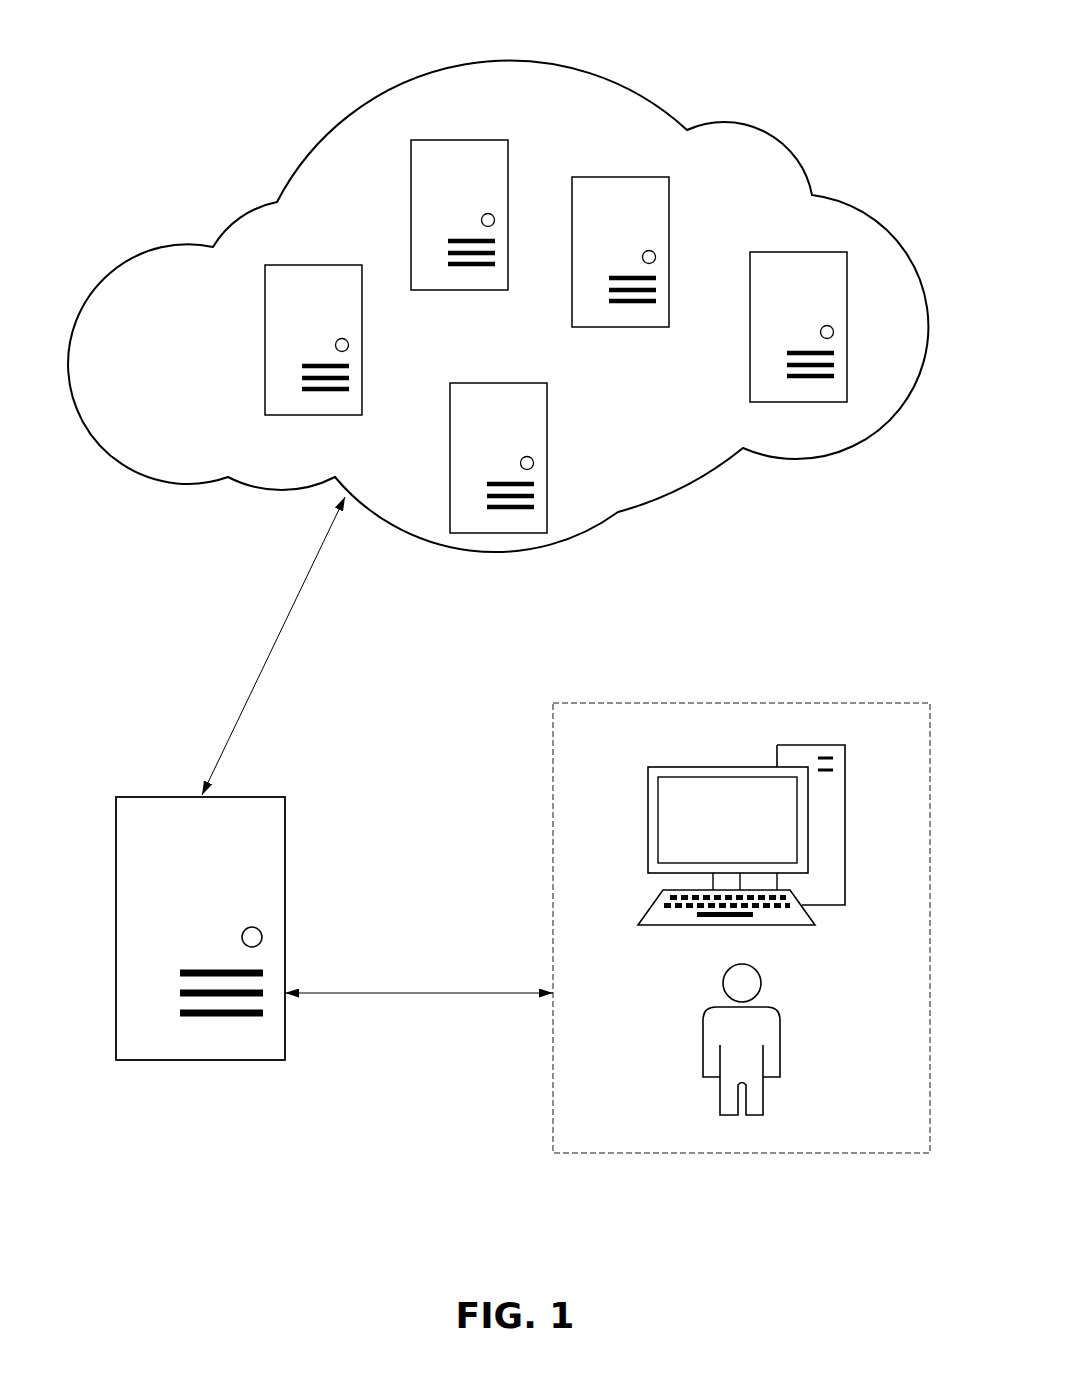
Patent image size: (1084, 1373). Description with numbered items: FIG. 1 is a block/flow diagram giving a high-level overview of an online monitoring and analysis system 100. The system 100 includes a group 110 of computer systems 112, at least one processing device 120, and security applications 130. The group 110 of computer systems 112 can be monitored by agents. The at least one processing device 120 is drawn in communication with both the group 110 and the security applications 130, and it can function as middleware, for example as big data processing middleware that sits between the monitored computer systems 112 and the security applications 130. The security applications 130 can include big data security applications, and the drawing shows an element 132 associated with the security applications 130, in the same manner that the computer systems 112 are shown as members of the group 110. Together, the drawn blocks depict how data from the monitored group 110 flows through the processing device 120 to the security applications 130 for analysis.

The system 100 is at (497, 34).
The cloud network 110 is at (778, 137).
The cloud server 112 is at (313, 340).
The server 120 is at (252, 797).
The user environment 130 is at (627, 703).
The user computer 132 is at (733, 777).